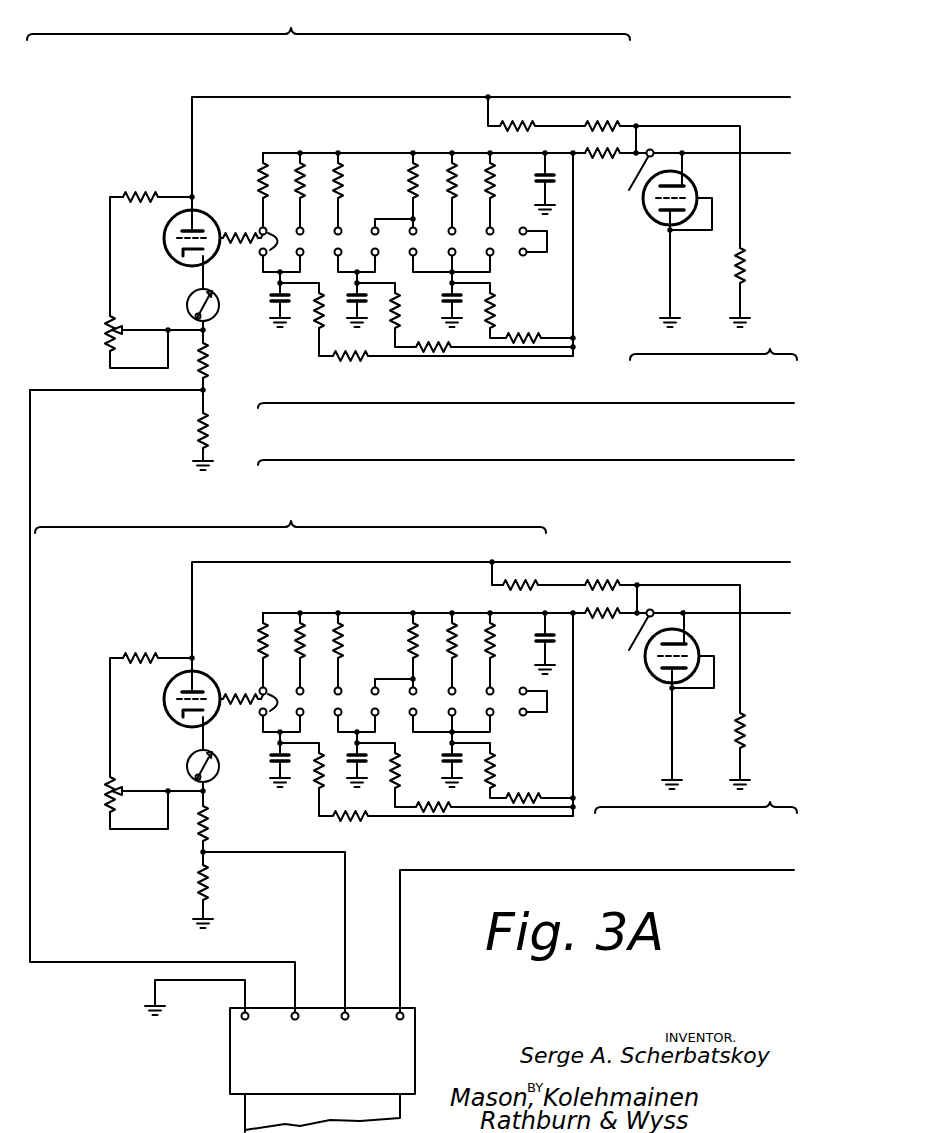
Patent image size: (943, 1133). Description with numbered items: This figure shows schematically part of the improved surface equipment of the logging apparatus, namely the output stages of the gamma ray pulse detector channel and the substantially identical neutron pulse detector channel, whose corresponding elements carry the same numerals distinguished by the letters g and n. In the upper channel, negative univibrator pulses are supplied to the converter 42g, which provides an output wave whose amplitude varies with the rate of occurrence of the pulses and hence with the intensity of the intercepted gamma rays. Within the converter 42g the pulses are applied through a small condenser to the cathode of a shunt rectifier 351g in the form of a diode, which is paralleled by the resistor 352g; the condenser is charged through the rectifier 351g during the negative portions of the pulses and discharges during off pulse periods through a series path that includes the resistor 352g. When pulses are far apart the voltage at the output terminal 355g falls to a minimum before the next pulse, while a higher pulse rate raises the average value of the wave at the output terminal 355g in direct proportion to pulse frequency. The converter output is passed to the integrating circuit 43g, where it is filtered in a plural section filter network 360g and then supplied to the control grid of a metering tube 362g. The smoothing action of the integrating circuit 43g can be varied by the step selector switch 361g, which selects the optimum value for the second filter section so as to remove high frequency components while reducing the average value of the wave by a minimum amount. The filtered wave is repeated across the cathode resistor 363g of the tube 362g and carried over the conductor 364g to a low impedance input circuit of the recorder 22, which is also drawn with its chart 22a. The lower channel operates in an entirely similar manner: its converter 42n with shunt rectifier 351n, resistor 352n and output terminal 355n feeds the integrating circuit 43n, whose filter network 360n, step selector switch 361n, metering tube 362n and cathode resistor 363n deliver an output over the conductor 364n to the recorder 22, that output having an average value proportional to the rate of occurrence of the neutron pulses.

The integrating circuit 43g is at (412, 235).
The integrating circuit 43n is at (416, 707).
The converter 42g is at (641, 239).
The converter 42n is at (643, 701).
The metering tube 362g is at (200, 214).
The metering tube 362n is at (222, 660).
The step selector switch 361g is at (270, 250).
The step selector switch 361n is at (270, 711).
The plural section filter network 360g is at (397, 203).
The plural section filter network 360n is at (395, 669).
The cathode resistor 363g is at (206, 428).
The cathode resistor 363n is at (206, 880).
The conductor 364g is at (31, 882).
The conductor 364n is at (344, 910).
The output terminal 355g is at (623, 171).
The output terminal 355n is at (619, 633).
The shunt rectifier 351g is at (655, 223).
The shunt rectifier 351n is at (655, 680).
The resistor 352g is at (743, 265).
The resistor 352n is at (743, 725).
The recording instrument 22 is at (416, 1027).
The recording chart 22a is at (244, 1114).